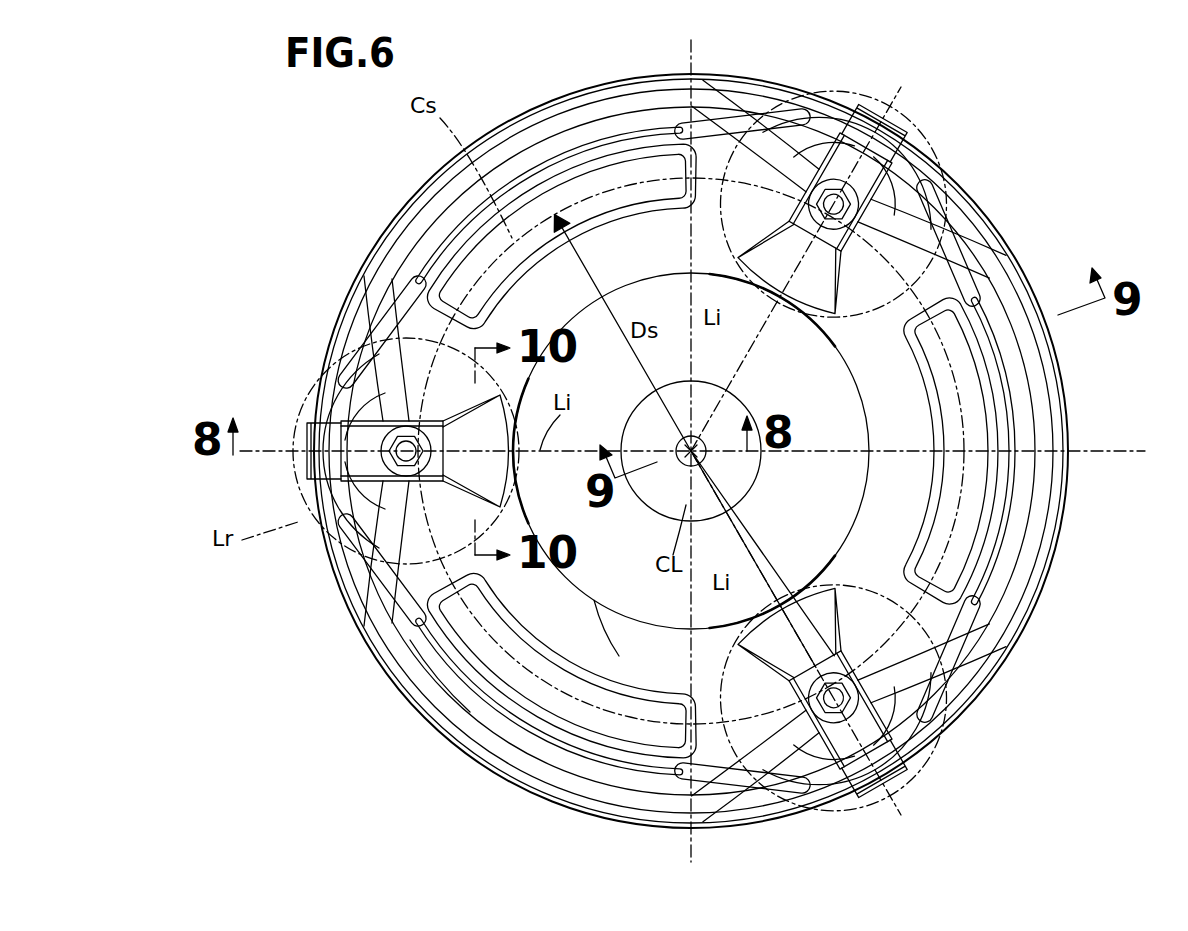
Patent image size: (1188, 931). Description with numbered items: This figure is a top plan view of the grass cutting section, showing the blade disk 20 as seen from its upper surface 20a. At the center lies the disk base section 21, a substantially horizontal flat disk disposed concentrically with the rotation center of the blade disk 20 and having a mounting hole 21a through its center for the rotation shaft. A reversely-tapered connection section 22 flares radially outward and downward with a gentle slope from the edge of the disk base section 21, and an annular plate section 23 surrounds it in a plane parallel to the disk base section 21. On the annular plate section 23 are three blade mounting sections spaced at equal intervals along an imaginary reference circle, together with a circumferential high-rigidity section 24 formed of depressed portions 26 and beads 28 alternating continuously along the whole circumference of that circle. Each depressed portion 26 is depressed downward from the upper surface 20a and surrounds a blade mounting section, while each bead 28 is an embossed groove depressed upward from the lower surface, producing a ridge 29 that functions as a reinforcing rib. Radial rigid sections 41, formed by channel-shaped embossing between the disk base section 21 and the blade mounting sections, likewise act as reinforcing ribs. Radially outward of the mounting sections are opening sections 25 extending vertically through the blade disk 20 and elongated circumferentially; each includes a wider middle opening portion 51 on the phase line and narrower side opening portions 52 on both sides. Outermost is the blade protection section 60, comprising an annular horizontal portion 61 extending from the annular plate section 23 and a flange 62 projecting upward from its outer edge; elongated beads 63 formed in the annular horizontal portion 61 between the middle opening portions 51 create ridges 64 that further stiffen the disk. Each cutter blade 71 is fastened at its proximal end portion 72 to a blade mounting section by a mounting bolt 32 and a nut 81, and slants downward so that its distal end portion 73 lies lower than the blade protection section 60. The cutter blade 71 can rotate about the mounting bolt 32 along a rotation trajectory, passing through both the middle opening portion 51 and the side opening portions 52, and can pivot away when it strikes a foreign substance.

The blade disk 20 is at (630, 72).
The upper surface 20a is at (648, 150).
The disk base section 21 is at (748, 478).
The mounting hole 21a is at (676, 466).
The reversely-tapered connection section 22 is at (862, 417).
The annular plate section 23 is at (567, 707).
The circumferential high-rigidity section 24 is at (462, 658).
The opening section 25 is at (378, 413).
The depressed portion 26 is at (372, 345).
The bead 28 is at (704, 450).
The ridge 29 is at (565, 190).
The mounting bolt 32 is at (395, 525).
The radial rigid section 41 is at (520, 468).
The middle opening portion 51 is at (358, 430).
The side opening portion 52 is at (412, 295).
The blade protection section 60 is at (1137, 537).
The annular horizontal portion 61 is at (1012, 540).
The flange 62 is at (1048, 572).
The elongated bead 63 is at (705, 451).
The ridge 64 is at (425, 225).
The cutter blade 71 is at (352, 472).
The proximal end portion 72 is at (418, 622).
The distal end portion 73 is at (310, 475).
The nut 81 is at (395, 443).